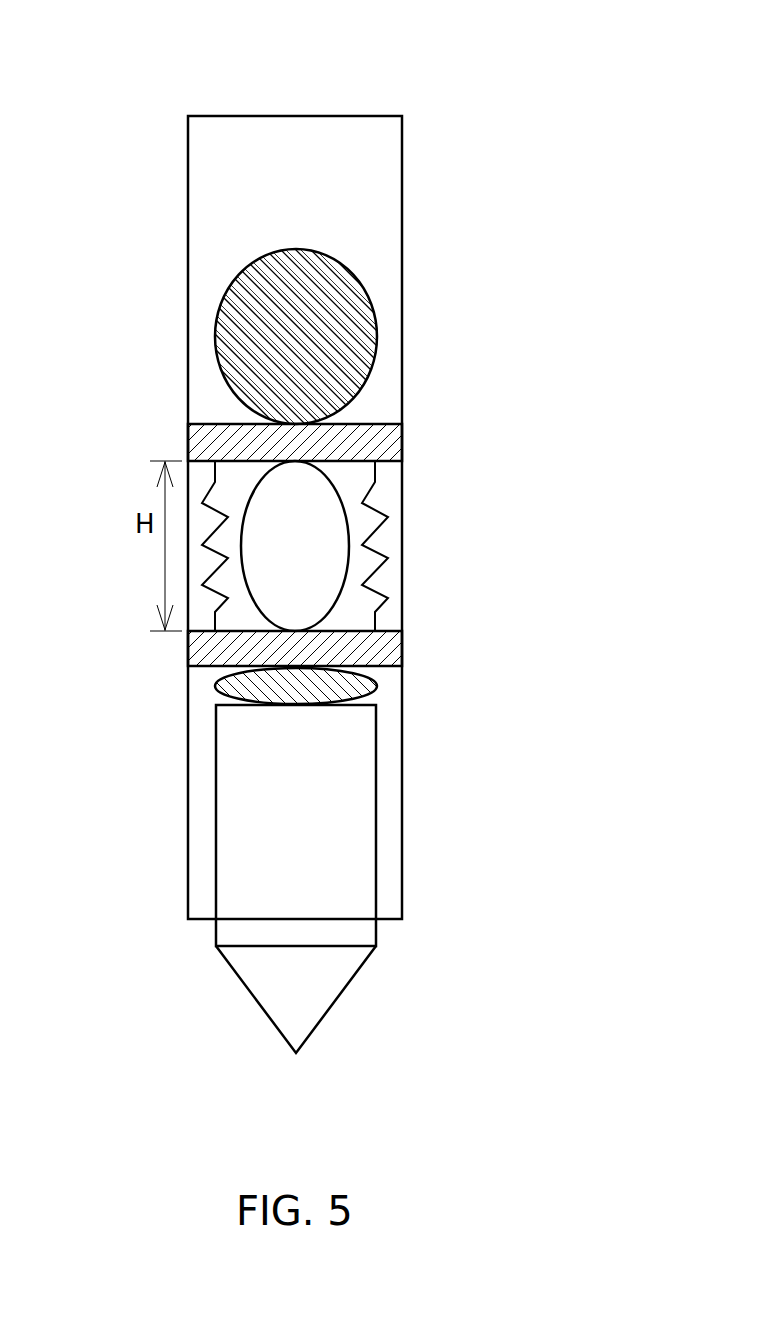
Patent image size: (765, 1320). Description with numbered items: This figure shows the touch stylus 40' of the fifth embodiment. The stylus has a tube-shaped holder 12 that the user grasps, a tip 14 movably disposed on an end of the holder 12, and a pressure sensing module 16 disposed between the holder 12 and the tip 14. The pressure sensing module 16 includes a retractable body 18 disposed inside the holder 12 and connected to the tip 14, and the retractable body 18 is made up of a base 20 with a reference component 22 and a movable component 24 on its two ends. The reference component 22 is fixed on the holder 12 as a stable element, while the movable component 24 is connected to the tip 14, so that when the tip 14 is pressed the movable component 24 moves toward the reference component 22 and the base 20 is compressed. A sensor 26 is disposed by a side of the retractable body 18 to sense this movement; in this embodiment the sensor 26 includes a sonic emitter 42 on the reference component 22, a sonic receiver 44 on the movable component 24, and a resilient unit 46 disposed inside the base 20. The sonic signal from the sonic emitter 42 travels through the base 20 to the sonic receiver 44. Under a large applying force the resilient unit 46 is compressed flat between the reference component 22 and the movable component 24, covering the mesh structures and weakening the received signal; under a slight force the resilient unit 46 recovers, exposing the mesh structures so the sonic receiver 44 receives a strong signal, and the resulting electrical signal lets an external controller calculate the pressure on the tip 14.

The touch stylus 40' is at (556, 50).
The holder 12 is at (395, 190).
The tip 14 is at (327, 977).
The pressure sensing module 16 is at (532, 522).
The retractable body 18 is at (467, 415).
The base 20 is at (376, 532).
The reference component 22 is at (402, 440).
The movable component 24 is at (402, 650).
The sensor 26 is at (107, 688).
The sonic emitter 42 is at (233, 363).
The sonic receiver 44 is at (233, 684).
The resilient unit 46 is at (258, 568).